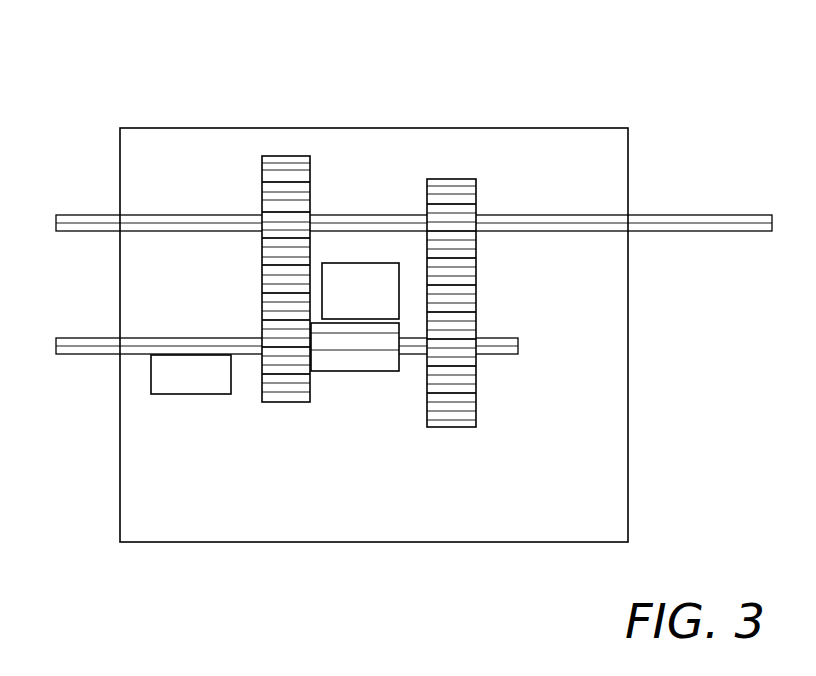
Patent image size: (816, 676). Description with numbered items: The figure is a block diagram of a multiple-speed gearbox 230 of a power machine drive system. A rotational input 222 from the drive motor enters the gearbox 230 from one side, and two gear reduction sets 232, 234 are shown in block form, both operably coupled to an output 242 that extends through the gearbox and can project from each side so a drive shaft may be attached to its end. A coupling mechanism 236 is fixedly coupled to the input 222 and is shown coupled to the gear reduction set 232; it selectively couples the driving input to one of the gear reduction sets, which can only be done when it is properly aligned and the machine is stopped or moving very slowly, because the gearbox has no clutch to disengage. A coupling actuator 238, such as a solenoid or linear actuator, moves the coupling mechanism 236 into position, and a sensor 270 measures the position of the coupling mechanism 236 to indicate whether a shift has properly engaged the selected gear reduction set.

The gearbox 230 is at (176, 54).
The rotational output member 222 is at (105, 337).
The gear reduction set 232 is at (262, 180).
The gear reduction set 234 is at (476, 402).
The coupling mechanism 236 is at (330, 373).
The coupling actuator 238 is at (191, 374).
The output 242 is at (667, 215).
The sensor 270 is at (360, 291).